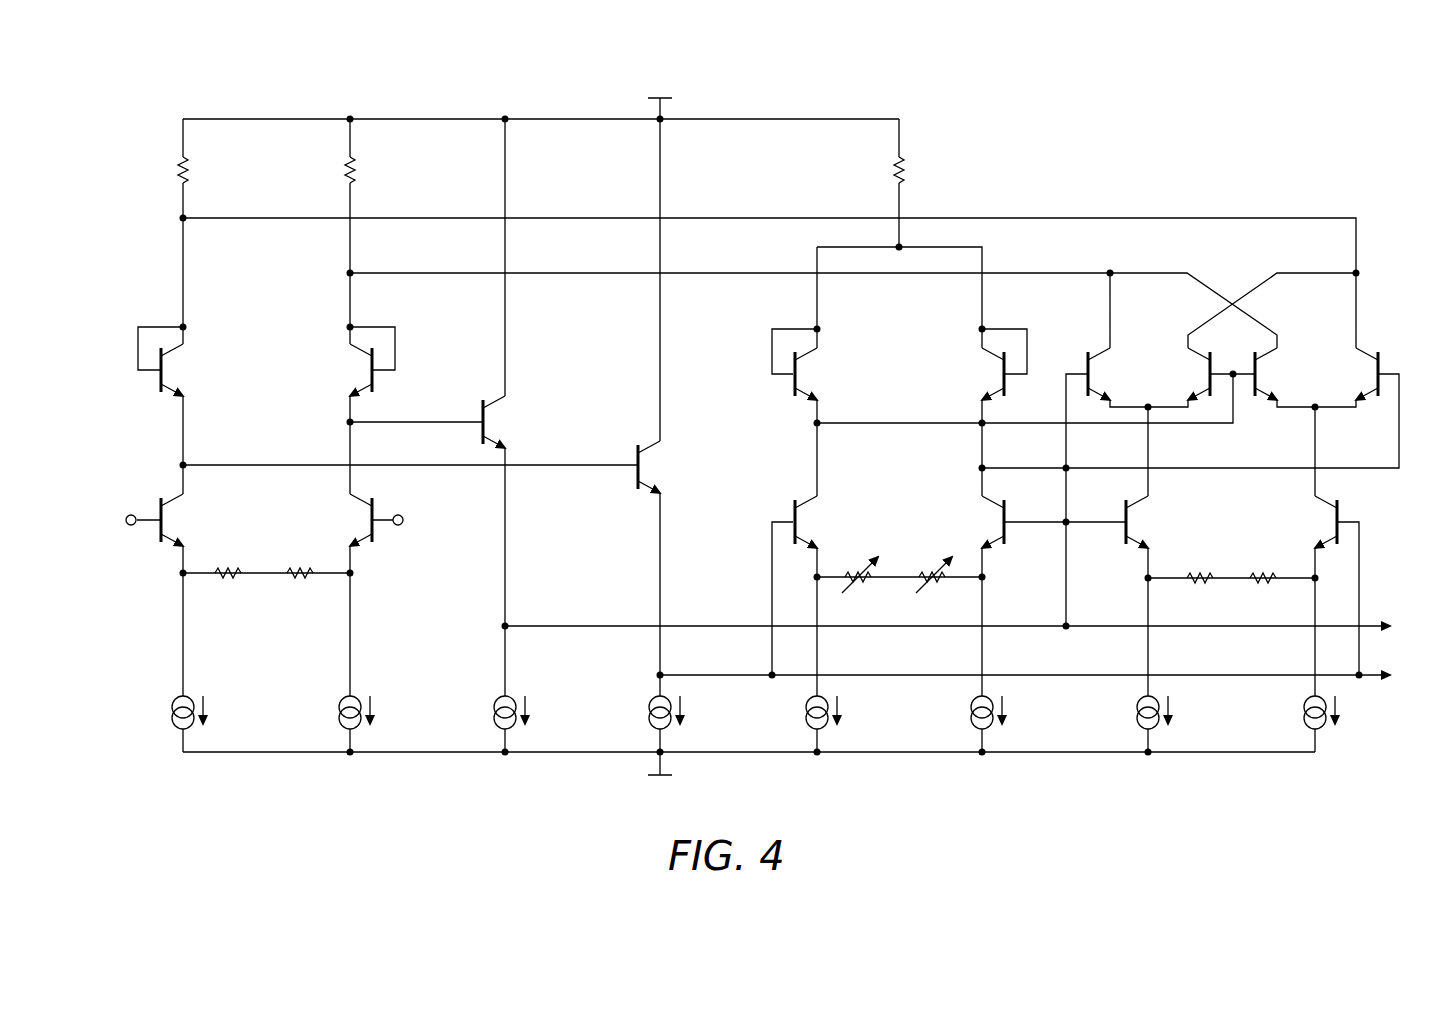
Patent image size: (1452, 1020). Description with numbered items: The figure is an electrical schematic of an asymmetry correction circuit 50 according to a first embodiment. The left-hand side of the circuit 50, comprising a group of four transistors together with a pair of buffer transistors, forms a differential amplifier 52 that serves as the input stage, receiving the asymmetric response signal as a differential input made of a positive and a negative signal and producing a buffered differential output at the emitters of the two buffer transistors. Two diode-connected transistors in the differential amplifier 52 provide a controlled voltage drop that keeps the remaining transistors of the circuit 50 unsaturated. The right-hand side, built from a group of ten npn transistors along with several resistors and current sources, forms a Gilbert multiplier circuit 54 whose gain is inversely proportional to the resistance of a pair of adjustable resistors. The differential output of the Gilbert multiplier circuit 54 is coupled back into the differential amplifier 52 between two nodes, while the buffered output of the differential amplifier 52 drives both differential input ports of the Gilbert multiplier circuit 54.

The asymmetry correction circuit 50 is at (1072, 84).
The differential amplifier 52 is at (279, 377).
The Gilbert multiplier circuit 54 is at (913, 377).